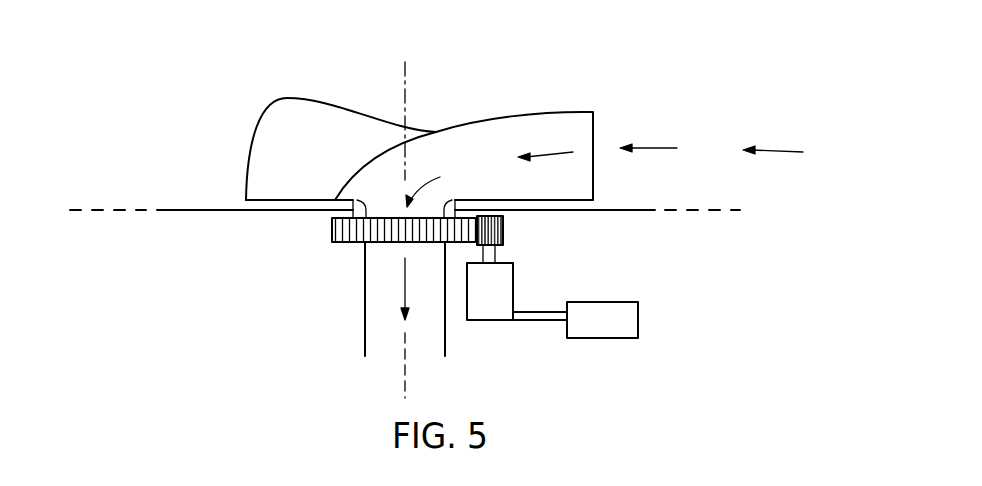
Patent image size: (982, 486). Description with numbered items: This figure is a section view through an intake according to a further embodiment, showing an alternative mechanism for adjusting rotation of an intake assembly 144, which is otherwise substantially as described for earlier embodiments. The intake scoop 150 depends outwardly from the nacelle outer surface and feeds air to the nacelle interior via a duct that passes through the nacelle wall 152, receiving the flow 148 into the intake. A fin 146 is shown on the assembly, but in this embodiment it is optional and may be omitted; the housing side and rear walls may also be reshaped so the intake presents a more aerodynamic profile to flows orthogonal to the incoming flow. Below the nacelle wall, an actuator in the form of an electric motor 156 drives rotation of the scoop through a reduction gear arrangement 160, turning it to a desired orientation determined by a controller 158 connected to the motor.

The intake assembly 144 is at (443, 112).
The fin 146 is at (300, 120).
The flow 148 is at (655, 147).
The intake scoop 150 is at (492, 135).
The nacelle wall 152 is at (207, 210).
The electric motor 156 is at (490, 292).
The controller 158 is at (603, 320).
The reduction gear arrangement 160 is at (332, 232).